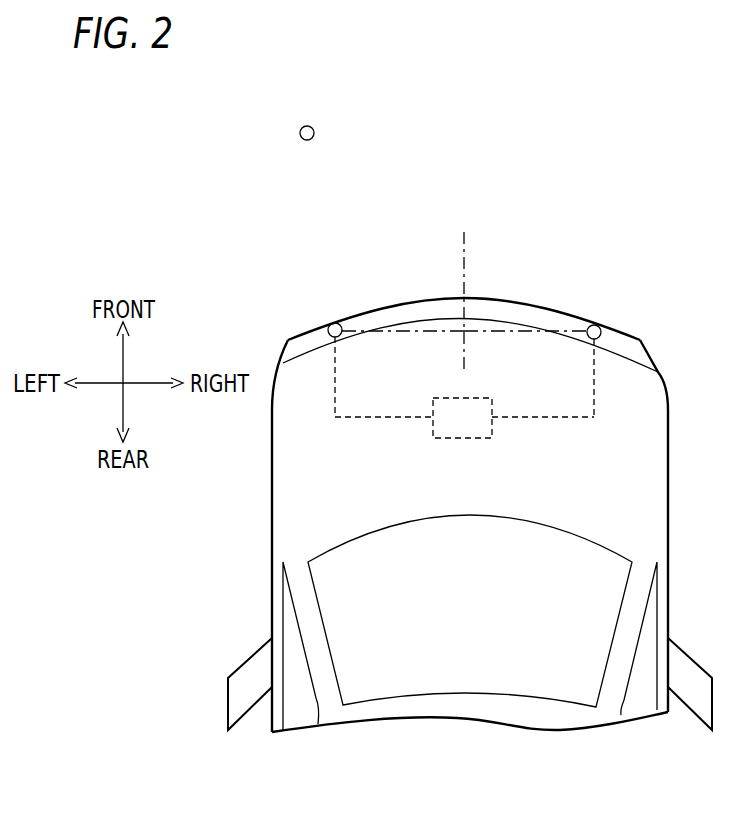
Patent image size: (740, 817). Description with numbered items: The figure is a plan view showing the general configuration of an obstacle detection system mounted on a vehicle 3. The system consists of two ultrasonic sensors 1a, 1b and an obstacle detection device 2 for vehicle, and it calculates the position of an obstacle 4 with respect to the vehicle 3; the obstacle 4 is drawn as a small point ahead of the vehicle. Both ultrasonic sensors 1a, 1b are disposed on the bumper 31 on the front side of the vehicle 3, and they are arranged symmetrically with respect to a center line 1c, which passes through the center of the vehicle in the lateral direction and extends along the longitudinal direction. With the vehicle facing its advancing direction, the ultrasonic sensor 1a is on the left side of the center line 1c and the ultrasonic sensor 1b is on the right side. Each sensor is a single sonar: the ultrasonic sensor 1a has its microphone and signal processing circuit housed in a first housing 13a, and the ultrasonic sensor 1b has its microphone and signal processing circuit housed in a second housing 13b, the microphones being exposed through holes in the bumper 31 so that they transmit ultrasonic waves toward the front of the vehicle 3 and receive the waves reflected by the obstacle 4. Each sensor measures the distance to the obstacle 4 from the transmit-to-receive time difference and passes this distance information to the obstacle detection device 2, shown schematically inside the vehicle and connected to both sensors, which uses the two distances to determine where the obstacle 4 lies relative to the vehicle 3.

The ultrasonic sensor 1a is at (334, 323).
The ultrasonic sensor 1b is at (597, 324).
The center line 1c is at (467, 244).
The obstacle detection device for vehicle 2 is at (478, 396).
The vehicle 3 is at (670, 437).
The bumper 31 is at (533, 310).
The obstacle 4 is at (309, 126).
The housing 13a is at (328, 328).
The housing 13b is at (601, 329).